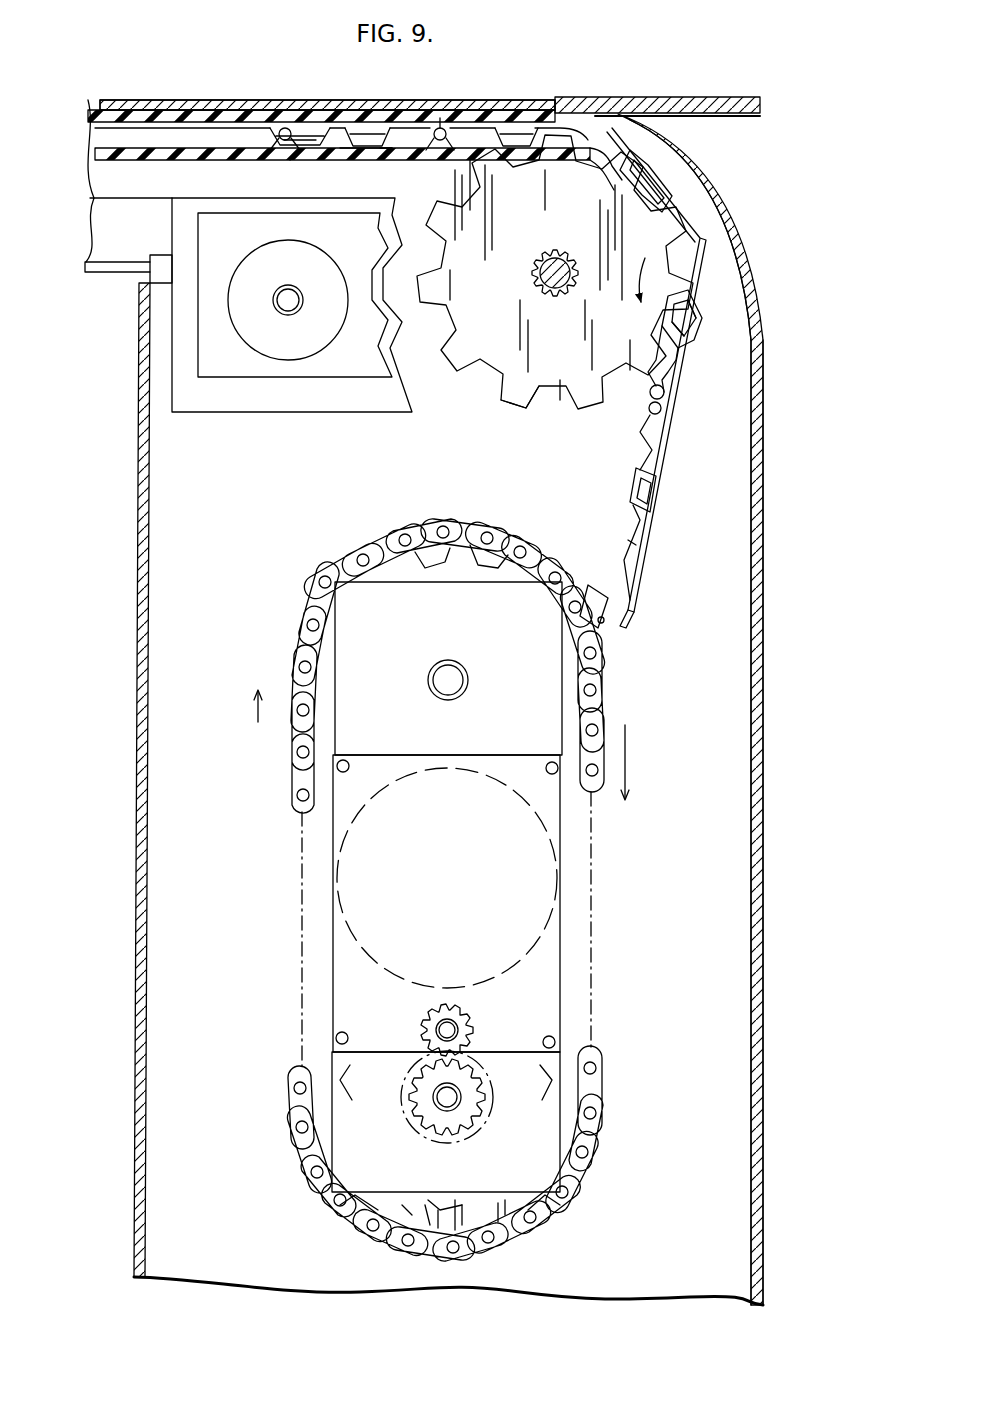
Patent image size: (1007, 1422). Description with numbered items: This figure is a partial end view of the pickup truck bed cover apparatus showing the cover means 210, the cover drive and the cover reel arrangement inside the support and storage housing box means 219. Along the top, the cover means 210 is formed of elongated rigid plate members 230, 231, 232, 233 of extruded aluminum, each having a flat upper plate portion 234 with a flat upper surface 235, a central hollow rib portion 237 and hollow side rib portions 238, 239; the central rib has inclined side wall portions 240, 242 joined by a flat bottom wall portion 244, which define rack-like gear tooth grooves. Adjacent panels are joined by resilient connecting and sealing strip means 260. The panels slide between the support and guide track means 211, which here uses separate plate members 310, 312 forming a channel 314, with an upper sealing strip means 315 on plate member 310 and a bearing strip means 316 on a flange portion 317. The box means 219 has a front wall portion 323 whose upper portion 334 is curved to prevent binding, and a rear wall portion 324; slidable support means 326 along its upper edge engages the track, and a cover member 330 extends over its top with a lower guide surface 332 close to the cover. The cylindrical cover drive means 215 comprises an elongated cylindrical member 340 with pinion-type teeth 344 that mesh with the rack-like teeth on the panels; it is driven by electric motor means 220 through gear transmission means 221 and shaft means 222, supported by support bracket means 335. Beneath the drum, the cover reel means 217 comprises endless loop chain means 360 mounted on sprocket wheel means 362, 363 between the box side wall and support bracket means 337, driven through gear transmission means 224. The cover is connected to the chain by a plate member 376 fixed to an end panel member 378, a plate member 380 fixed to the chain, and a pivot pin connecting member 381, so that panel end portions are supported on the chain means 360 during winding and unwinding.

The support and guide track means 211 is at (87, 100).
The upper sealing strip means 315 is at (175, 112).
The plate member 310 is at (246, 106).
The lower guide surface 332 is at (232, 135).
The cover member 330 is at (693, 104).
The bearing strip means 316 is at (200, 160).
The hollow side rib portion 238 is at (310, 128).
The elongated rigid plate member 230 is at (286, 127).
The central hollow rib portion 237 is at (372, 136).
The hollow side rib portion 239 is at (443, 127).
The elongated rigid plate member 231 is at (506, 127).
The inclined side wall portion 240 is at (300, 152).
The flat bottom wall portion 244 is at (352, 148).
The inclined side wall portion 242 is at (392, 142).
The flange portion 317 is at (100, 178).
The channel 314 is at (100, 237).
The plate member 312 is at (112, 273).
The slidable support means 326 is at (158, 262).
The support bracket means 335 is at (300, 413).
The electric motor means 220 is at (249, 346).
The cylindrical cover drive means 215 is at (500, 386).
The pinion-type teeth 344 is at (668, 222).
The elongated cylindrical member 340 is at (535, 409).
The gear transmission means 221 is at (533, 268).
The shaft means 222 is at (563, 262).
The upper portion of box front wall 334 is at (754, 246).
The elongated rigid plate member 232 is at (668, 176).
The front wall portion 323 is at (766, 695).
The support and storage housing box means 219 is at (770, 937).
The rear wall portion 324 is at (139, 762).
The multiple panel cover means 210 is at (665, 401).
The flat upper surface 235 is at (680, 325).
The elongated rigid plate member 233 is at (694, 356).
The flat upper plate portion 234 is at (684, 357).
The resilient connecting and sealing strip means 260 is at (640, 398).
The end panel member 378 is at (644, 494).
The plate member 376 is at (634, 586).
The plate member 380 is at (586, 584).
The pivot pin connecting member 381 is at (610, 622).
The endless loop chain means 360 is at (366, 541).
The sprocket wheel means 362 is at (468, 560).
The cover reel means 217 is at (290, 576).
The support bracket means 337 is at (556, 812).
The sprocket wheel means 363 is at (425, 1202).
The gear transmission means 224 is at (497, 1092).